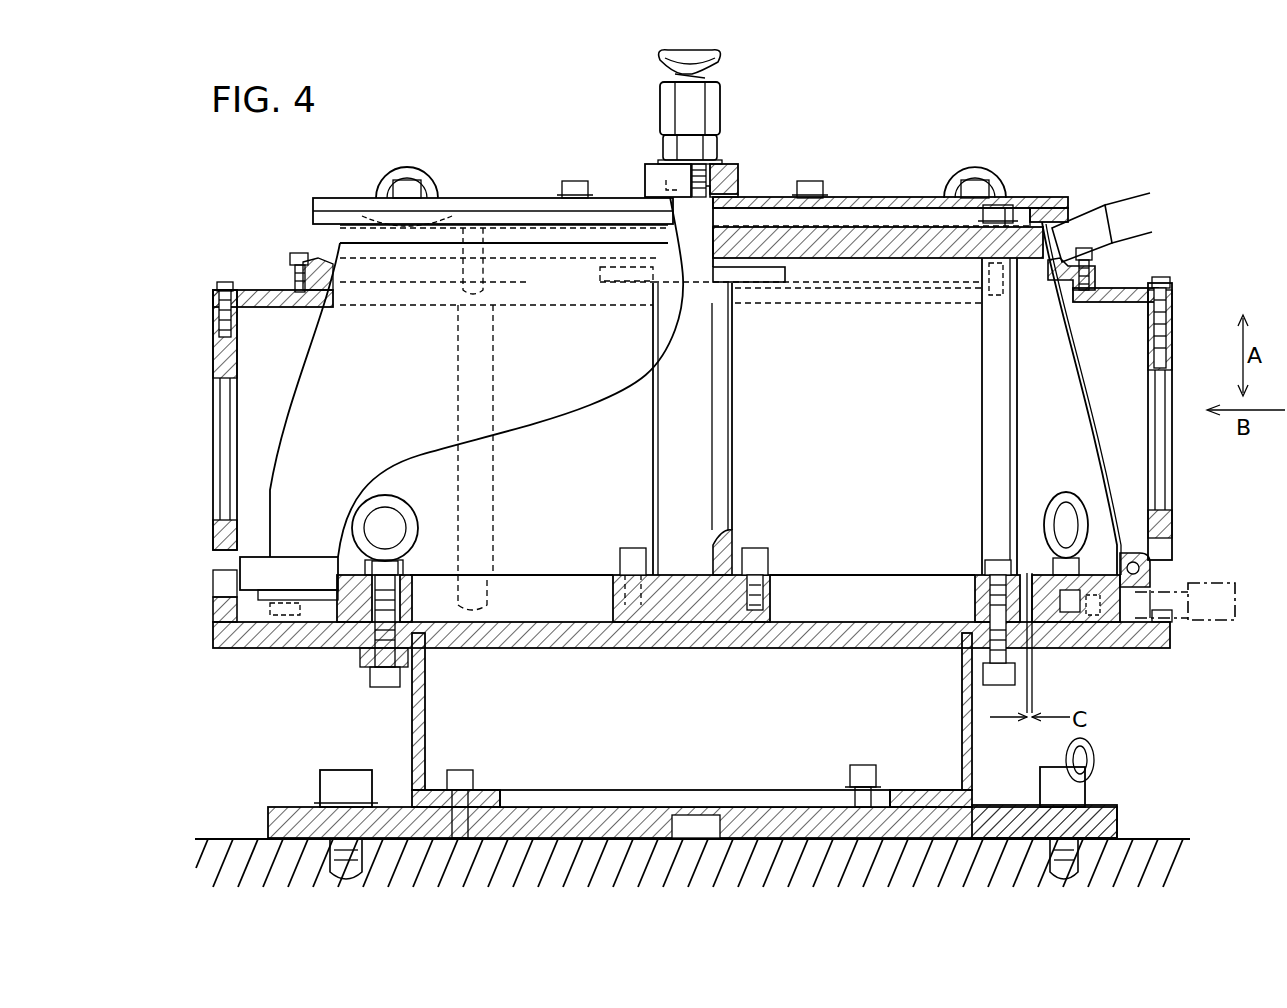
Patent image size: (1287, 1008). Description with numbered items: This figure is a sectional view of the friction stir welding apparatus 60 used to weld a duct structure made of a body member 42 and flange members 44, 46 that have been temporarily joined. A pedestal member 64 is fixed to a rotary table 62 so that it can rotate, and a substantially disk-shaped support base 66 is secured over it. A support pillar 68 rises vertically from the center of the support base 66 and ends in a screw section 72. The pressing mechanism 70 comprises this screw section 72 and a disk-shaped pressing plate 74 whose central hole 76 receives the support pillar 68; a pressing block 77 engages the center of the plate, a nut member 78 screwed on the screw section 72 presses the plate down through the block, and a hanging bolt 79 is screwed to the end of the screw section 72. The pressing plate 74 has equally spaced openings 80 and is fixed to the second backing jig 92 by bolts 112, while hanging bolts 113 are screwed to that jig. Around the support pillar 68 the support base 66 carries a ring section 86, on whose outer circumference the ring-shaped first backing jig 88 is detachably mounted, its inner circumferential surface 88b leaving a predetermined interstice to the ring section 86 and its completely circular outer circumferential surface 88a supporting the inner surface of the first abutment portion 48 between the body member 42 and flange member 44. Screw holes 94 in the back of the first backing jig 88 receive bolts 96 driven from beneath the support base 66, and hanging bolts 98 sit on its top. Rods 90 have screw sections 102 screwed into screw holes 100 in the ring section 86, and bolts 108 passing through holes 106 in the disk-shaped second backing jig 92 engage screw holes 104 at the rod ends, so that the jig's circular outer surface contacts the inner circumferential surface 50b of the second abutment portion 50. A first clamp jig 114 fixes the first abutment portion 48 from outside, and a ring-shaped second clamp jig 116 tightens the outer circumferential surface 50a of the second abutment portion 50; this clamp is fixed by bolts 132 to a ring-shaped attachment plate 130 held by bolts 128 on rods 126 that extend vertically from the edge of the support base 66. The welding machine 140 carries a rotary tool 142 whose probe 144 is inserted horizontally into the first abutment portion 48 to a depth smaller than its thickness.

The body member 42 is at (1096, 405).
The flange member 44 is at (254, 635).
The flange member 46 is at (362, 226).
The first abutment portion 48 is at (296, 612).
The second abutment portion 50 is at (520, 247).
The outer circumferential surface 50a is at (338, 242).
The inner circumferential surface 50b is at (338, 255).
The friction stir welding apparatus 60 is at (886, 80).
The rotary table 62 is at (1170, 838).
The pedestal member 64 is at (1007, 807).
The support base 66 is at (820, 624).
The support pillar 68 is at (660, 478).
The pressing mechanism 70 is at (758, 150).
The screw section 72 is at (702, 175).
The pressing plate 74 is at (858, 200).
The hole 76 is at (738, 178).
The pressing block 77 is at (650, 176).
The nut member 78 is at (668, 145).
The hanging bolt 79 is at (662, 74).
The openings 80 is at (442, 212).
The ring section 86 is at (410, 603).
The first backing jig 88 is at (368, 640).
The outer circumferential surface 88a is at (1112, 575).
The inner circumferential surface 88b is at (1028, 575).
The rods 90 is at (985, 458).
The second backing jig 92 is at (850, 262).
The screw holes 94 is at (1045, 620).
The bolts 96 is at (1095, 622).
The hanging bolts 98 is at (362, 520).
The screw holes 100 is at (985, 570).
The screw sections 102 is at (980, 600).
The screw holes 104 is at (1000, 300).
The holes 106 is at (990, 232).
The bolts 108 is at (1010, 212).
The bolts 112 is at (573, 180).
The hanging bolts 113 is at (408, 172).
The first clamp jig 114 is at (1150, 558).
The second clamp jig 116 is at (290, 274).
The rods 126 is at (1160, 465).
The bolts 128 is at (1160, 284).
The attachment plate 130 is at (1108, 303).
The bolts 132 is at (1095, 257).
The welding machine 140 is at (1100, 208).
The rotary tool 142 is at (1188, 622).
The probe 144 is at (1128, 624).